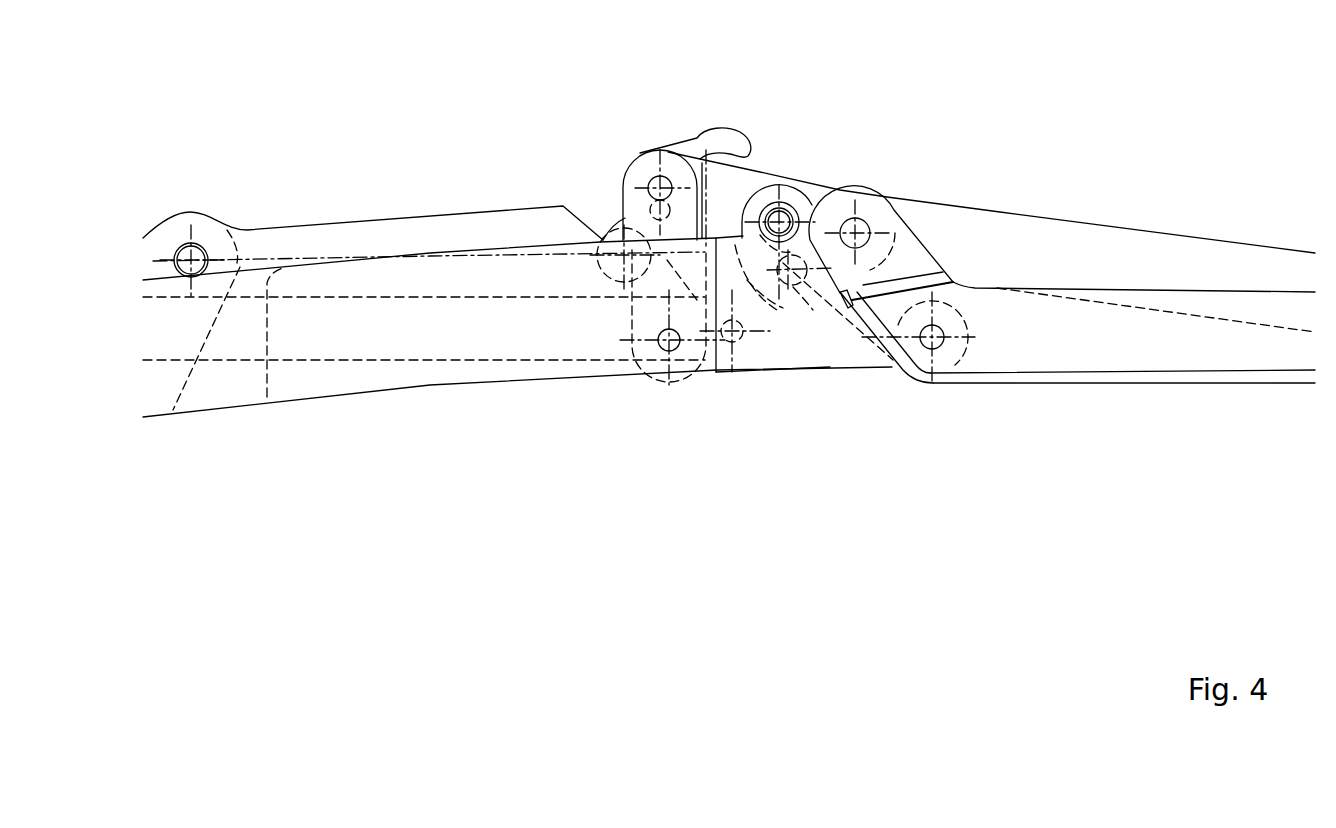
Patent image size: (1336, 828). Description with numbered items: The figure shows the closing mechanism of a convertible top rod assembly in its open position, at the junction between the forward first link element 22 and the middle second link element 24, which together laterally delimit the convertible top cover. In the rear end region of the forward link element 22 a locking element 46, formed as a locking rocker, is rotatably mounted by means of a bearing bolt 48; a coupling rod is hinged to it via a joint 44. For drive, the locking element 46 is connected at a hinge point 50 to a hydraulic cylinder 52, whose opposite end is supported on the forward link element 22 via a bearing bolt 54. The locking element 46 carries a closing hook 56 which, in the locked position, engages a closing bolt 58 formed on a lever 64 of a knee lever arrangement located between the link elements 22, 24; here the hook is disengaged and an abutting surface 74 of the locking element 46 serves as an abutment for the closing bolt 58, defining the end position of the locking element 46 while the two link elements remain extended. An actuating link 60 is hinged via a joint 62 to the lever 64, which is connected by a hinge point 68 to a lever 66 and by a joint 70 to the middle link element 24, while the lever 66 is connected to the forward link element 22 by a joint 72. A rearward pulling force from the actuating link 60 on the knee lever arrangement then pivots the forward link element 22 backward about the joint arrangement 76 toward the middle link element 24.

The first link element 22 is at (217, 385).
The second link element 24 is at (1215, 372).
The joint 44 is at (732, 330).
The locking element 46 is at (617, 223).
The bearing bolt 48 is at (705, 247).
The hinge point 50 is at (637, 252).
The hydraulic cylinder 52 is at (297, 260).
The bearing bolt 54 is at (191, 258).
The closing hook 56 is at (717, 147).
The closing bolt 58 is at (785, 262).
The actuating link 60 is at (1050, 248).
The joint 62 is at (783, 217).
The lever 64 is at (953, 322).
The lever 66 is at (648, 322).
The hinge point 68 is at (652, 192).
The joint 70 is at (932, 337).
The joint 72 is at (668, 337).
The abutting surface 74 is at (787, 268).
The joint arrangement 76 is at (855, 232).